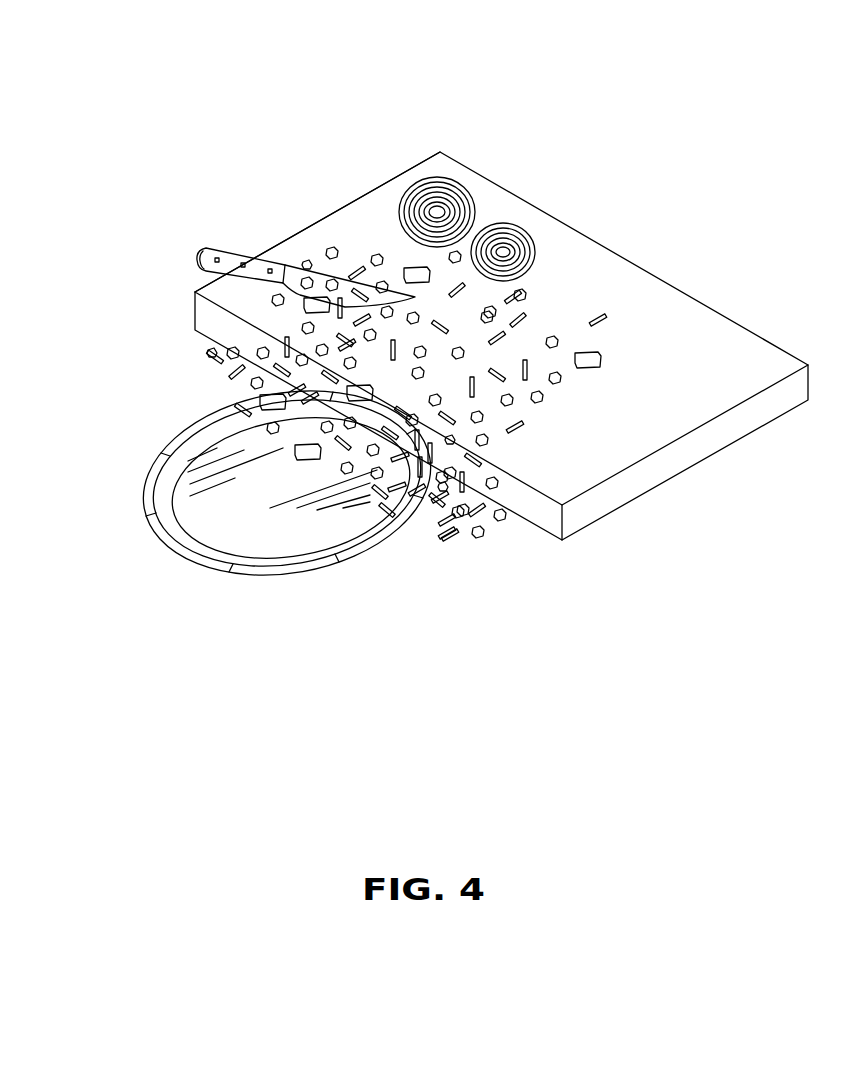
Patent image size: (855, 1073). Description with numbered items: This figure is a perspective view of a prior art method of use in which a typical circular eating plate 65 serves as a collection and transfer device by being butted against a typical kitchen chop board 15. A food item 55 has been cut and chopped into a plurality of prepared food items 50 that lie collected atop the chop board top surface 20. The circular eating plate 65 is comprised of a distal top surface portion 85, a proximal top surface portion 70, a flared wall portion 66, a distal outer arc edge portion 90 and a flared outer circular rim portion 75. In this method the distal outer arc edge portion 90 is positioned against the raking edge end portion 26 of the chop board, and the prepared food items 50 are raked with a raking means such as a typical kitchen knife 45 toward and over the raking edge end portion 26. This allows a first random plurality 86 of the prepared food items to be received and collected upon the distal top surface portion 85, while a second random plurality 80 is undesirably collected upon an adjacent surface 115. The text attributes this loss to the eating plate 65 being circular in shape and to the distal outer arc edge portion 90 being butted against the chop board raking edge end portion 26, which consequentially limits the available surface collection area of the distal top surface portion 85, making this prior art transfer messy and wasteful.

The kitchen chop board 15 is at (425, 347).
The chop board top surface 20 is at (715, 391).
The raking edge end portion 26 is at (528, 524).
The kitchen knife 45 is at (256, 212).
The prepared food items 50 is at (241, 222).
The food item 55 is at (381, 146).
The circular eating plate 65 is at (278, 616).
The flared wall portion 66 is at (170, 543).
The proximal top surface portion 70 is at (210, 490).
The flared outer circular rim portion 75 is at (226, 583).
The second random plurality 80 is at (558, 632).
The distal top surface portion 85 is at (299, 429).
The first random plurality 86 is at (364, 612).
The distal outer arc edge portion 90 is at (564, 303).
The adjacent surface 115 is at (487, 596).